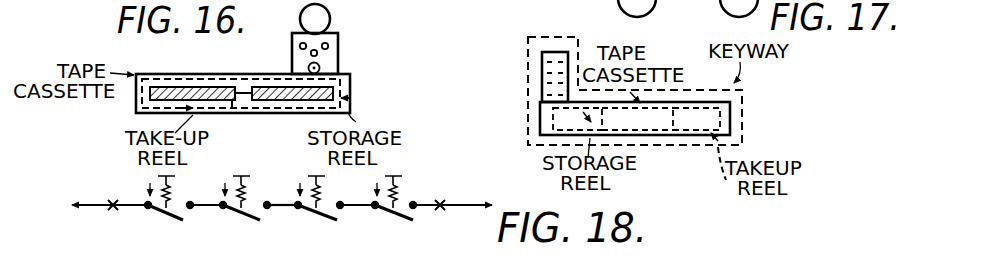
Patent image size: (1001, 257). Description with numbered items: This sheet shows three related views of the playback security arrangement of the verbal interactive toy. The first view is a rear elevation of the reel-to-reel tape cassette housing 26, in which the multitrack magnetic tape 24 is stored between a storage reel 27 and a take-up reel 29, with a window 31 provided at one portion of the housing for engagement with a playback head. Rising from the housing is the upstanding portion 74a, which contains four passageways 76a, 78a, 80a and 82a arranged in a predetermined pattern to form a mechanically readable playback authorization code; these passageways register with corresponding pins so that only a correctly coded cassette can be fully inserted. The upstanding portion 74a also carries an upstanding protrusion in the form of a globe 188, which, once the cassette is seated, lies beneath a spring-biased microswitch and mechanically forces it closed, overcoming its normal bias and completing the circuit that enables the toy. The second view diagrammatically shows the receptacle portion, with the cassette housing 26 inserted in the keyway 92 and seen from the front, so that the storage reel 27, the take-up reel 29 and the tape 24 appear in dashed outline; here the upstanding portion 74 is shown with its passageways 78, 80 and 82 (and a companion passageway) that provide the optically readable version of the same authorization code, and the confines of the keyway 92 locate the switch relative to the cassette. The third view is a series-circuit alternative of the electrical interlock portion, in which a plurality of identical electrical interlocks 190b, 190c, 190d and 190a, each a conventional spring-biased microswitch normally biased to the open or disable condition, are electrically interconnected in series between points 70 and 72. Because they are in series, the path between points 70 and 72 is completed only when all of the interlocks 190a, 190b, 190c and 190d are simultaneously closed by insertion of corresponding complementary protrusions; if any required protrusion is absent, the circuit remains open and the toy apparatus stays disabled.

In FIG. 16, the multitrack magnetic tape 24 is at (208, 85).
In FIG. 17, the multitrack magnetic tape 24 is at (660, 110).
In FIG. 16, the reel-to-reel tape cassette housing 26 is at (163, 72).
In FIG. 17, the reel-to-reel tape cassette housing 26 is at (733, 109).
In FIG. 16, the storage reel 27 is at (288, 114).
In FIG. 17, the storage reel 27 is at (540, 134).
In FIG. 16, the take-up reel 29 is at (132, 107).
In FIG. 17, the take-up reel 29 is at (744, 123).
In FIG. 16, the window 31 is at (232, 101).
In FIG. 17, the upstanding portion 74 is at (553, 50).
In FIG. 16, the upstanding portion 74a is at (339, 58).
In FIG. 16, the passageway 76a is at (329, 46).
In FIG. 17, the passageway 78 is at (542, 62).
In FIG. 16, the passageway 78a is at (299, 45).
In FIG. 17, the passageway 80 is at (542, 80).
In FIG. 16, the passageway 80a is at (308, 68).
In FIG. 17, the passageway 82 is at (542, 98).
In FIG. 16, the passageway 82a is at (350, 97).
In FIG. 17, the keyway 92 is at (742, 92).
In FIG. 16, the globe 188 is at (329, 13).
In FIG. 18, the circuit point 70 is at (120, 214).
In FIG. 18, the circuit point 72 is at (441, 213).
In FIG. 18, the electrical interlock 190a is at (382, 214).
In FIG. 18, the electrical interlock 190b is at (142, 214).
In FIG. 18, the electrical interlock 190c is at (222, 214).
In FIG. 18, the electrical interlock 190d is at (306, 210).